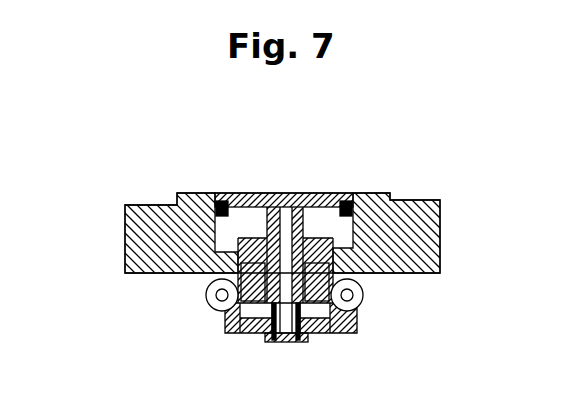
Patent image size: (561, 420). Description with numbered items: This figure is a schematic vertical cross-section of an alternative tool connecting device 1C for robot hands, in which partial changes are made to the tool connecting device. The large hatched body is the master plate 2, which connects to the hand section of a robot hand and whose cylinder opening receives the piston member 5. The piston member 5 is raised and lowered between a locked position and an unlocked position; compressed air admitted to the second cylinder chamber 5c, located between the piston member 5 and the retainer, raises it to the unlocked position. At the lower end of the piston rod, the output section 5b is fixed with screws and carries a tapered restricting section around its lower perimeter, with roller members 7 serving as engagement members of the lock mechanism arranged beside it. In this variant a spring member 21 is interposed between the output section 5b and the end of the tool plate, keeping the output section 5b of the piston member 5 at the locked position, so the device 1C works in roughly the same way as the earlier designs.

The tool connecting device 1C is at (146, 126).
The master plate 2 is at (164, 192).
The piston member 5 is at (256, 215).
The second cylinder chamber 5c is at (232, 213).
The output section 5b is at (217, 320).
The roller members 7 is at (211, 306).
The spring member 21 is at (286, 342).